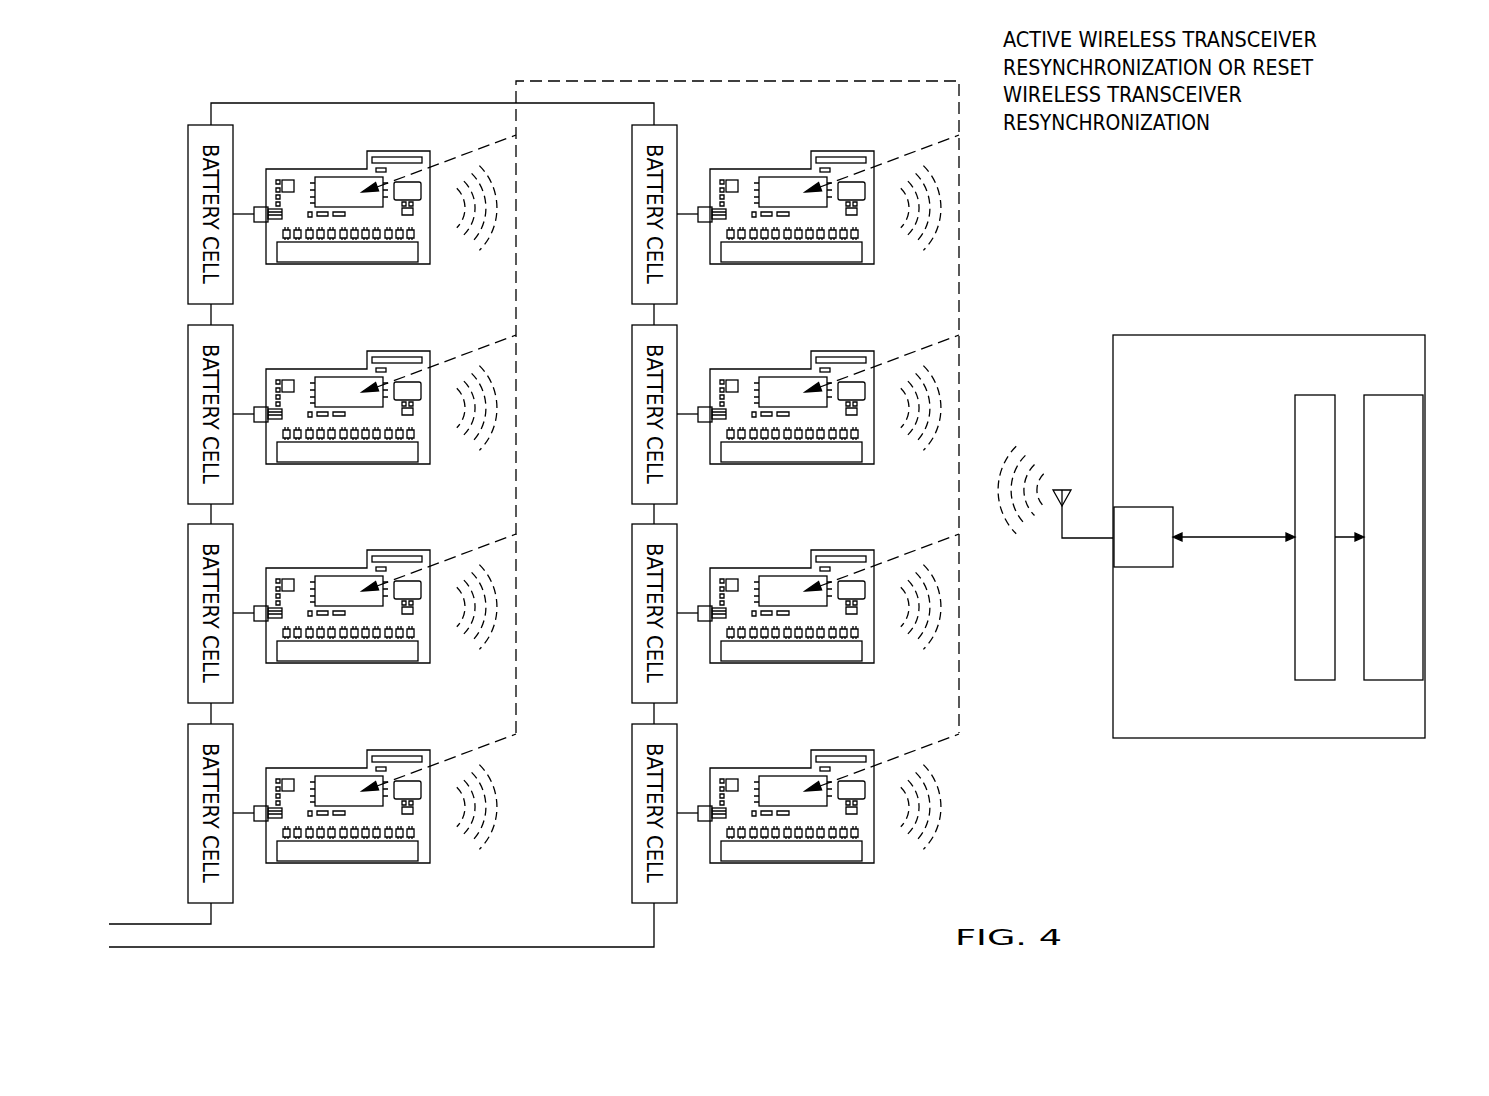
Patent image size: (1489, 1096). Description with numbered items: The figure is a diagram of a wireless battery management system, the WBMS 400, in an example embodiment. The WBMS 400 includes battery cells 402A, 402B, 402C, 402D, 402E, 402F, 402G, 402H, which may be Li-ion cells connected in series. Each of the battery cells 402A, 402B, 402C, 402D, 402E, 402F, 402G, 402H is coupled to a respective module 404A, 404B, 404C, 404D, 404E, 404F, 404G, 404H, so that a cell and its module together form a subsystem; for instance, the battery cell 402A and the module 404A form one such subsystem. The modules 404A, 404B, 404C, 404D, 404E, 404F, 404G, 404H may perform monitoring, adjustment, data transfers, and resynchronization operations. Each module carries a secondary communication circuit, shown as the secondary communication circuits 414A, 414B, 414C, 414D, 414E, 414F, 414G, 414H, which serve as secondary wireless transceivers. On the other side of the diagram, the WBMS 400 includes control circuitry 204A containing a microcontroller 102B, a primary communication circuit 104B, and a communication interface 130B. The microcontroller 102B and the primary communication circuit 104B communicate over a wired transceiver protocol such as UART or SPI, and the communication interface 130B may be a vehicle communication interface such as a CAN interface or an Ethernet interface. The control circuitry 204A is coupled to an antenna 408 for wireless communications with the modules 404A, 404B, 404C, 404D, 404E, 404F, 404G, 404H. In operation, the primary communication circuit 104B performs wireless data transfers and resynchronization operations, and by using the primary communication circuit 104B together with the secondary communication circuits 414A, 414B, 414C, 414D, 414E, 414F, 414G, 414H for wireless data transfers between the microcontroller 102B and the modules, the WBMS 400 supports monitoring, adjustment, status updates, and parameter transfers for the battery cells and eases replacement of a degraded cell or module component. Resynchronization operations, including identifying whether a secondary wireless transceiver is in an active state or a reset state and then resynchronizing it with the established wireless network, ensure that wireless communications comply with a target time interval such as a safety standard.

The WBMS 400 is at (1400, 186).
The battery cell 402A is at (166, 813).
The battery cell 402B is at (166, 613).
The battery cell 402C is at (166, 414).
The battery cell 402D is at (188, 201).
The battery cell 402E is at (611, 214).
The battery cell 402F is at (611, 414).
The battery cell 402G is at (610, 613).
The battery cell 402H is at (610, 813).
The module 404A is at (365, 833).
The module 404B is at (365, 633).
The module 404C is at (365, 434).
The module 404D is at (375, 264).
The module 404E is at (809, 234).
The module 404F is at (809, 434).
The module 404G is at (809, 633).
The module 404H is at (809, 833).
The secondary communication circuit 414A is at (340, 764).
The secondary communication circuit 414B is at (340, 564).
The secondary communication circuit 414C is at (340, 365).
The secondary communication circuit 414D is at (331, 188).
The secondary communication circuit 414E is at (784, 165).
The secondary communication circuit 414F is at (785, 365).
The secondary communication circuit 414G is at (783, 564).
The secondary communication circuit 414H is at (784, 764).
The control circuitry 204A is at (1245, 378).
The primary communication circuit 104B is at (1143, 567).
The microcontroller 102B is at (1313, 680).
The communication interface 130B is at (1395, 680).
The antenna 408 is at (1066, 490).